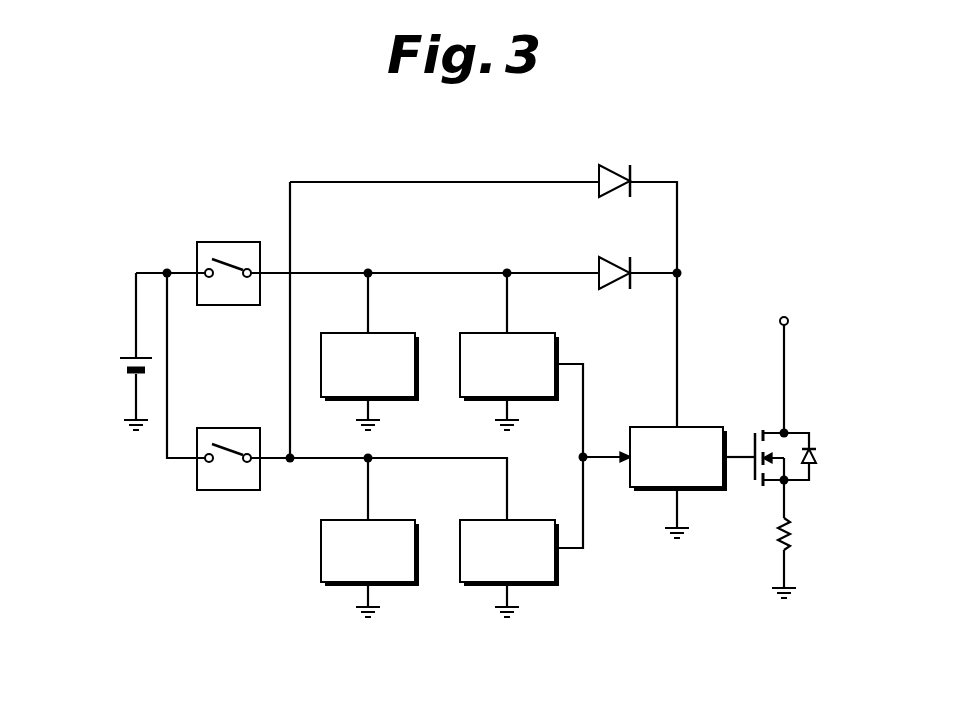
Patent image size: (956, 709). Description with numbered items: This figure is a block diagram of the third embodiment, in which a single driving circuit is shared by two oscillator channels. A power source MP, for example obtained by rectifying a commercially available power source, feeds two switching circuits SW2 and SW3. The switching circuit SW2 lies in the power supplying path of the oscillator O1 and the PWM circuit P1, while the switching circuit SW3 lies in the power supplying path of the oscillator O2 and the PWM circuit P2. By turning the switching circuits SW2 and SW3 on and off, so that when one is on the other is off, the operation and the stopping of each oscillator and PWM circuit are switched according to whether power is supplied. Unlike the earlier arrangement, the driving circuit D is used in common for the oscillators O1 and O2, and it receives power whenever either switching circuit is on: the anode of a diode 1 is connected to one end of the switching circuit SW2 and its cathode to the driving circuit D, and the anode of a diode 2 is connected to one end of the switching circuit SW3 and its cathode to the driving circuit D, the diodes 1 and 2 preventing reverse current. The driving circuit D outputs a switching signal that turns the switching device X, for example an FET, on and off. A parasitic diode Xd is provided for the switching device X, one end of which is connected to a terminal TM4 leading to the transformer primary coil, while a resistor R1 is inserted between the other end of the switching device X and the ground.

The diode 1 is at (614, 257).
The diode 2 is at (614, 165).
The power source MP is at (118, 366).
The switching circuit SW2 is at (226, 242).
The switching circuit SW3 is at (226, 428).
The oscillator O1 is at (396, 333).
The oscillator O2 is at (396, 520).
The PWM circuit P1 is at (536, 333).
The PWM circuit P2 is at (536, 520).
The driving circuit D is at (641, 423).
The terminal TM4 is at (783, 316).
The switching device X is at (762, 428).
The parasitic diode Xd is at (818, 455).
The resistor R1 is at (800, 533).